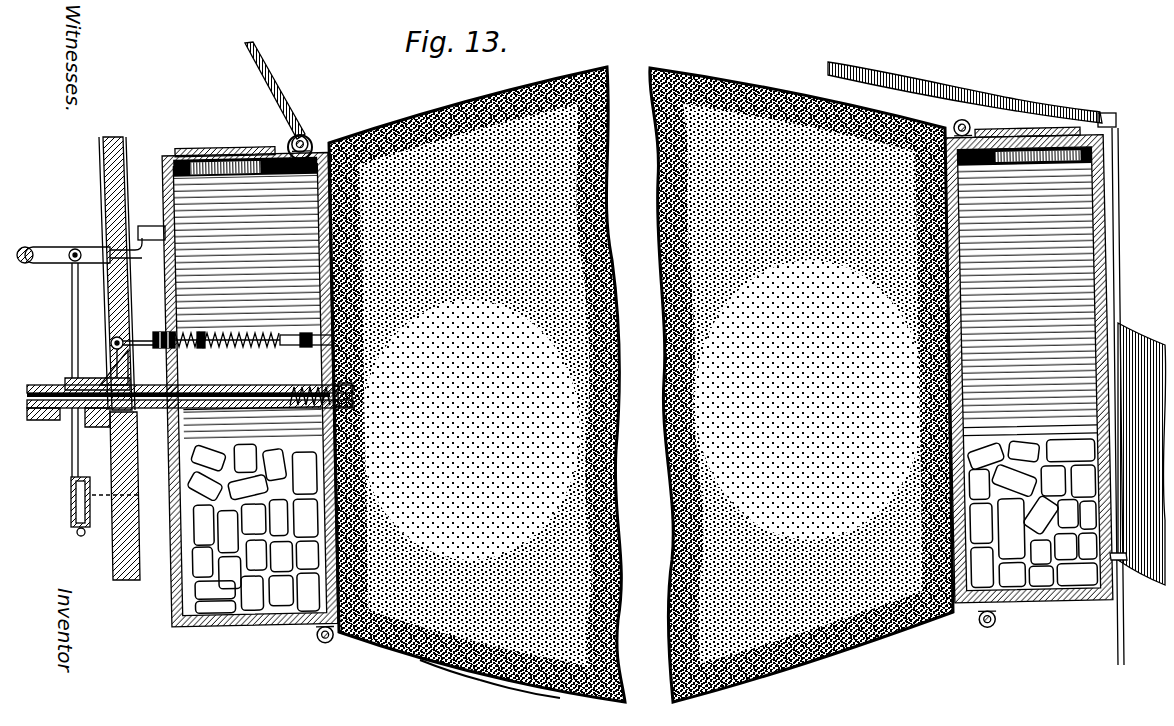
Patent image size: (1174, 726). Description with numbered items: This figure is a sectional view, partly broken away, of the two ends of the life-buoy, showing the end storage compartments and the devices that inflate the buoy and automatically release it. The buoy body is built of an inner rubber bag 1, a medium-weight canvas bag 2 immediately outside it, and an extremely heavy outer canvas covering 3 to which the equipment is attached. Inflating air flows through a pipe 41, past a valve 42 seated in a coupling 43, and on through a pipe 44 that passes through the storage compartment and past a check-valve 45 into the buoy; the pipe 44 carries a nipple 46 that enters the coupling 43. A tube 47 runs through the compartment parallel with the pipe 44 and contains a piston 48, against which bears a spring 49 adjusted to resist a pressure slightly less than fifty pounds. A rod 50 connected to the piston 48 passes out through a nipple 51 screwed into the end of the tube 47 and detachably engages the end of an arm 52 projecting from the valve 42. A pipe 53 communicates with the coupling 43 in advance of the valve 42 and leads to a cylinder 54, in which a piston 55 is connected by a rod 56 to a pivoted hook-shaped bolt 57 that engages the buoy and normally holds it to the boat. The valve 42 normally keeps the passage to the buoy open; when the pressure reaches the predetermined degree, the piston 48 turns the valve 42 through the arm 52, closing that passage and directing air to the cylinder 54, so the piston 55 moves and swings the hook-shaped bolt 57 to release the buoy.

The rubber bag 1 is at (406, 658).
The canvas bag 2 is at (452, 672).
The canvas covering 3 is at (487, 678).
The pipe 41 is at (36, 410).
The valve 42 is at (98, 418).
The coupling 43 is at (70, 378).
The pipe 44 is at (258, 412).
The check-valve 45 is at (296, 386).
The nipple 46 is at (150, 412).
The tube 47 is at (240, 333).
The piston 48 is at (310, 334).
The spring 49 is at (202, 332).
The rod 50 is at (145, 346).
The nipple 51 is at (162, 332).
The arm 52 is at (110, 350).
The pipe 53 is at (72, 440).
The cylinder 54 is at (70, 505).
The piston 55 is at (127, 494).
The rod 56 is at (72, 297).
The hook-shaped bolt 57 is at (100, 248).